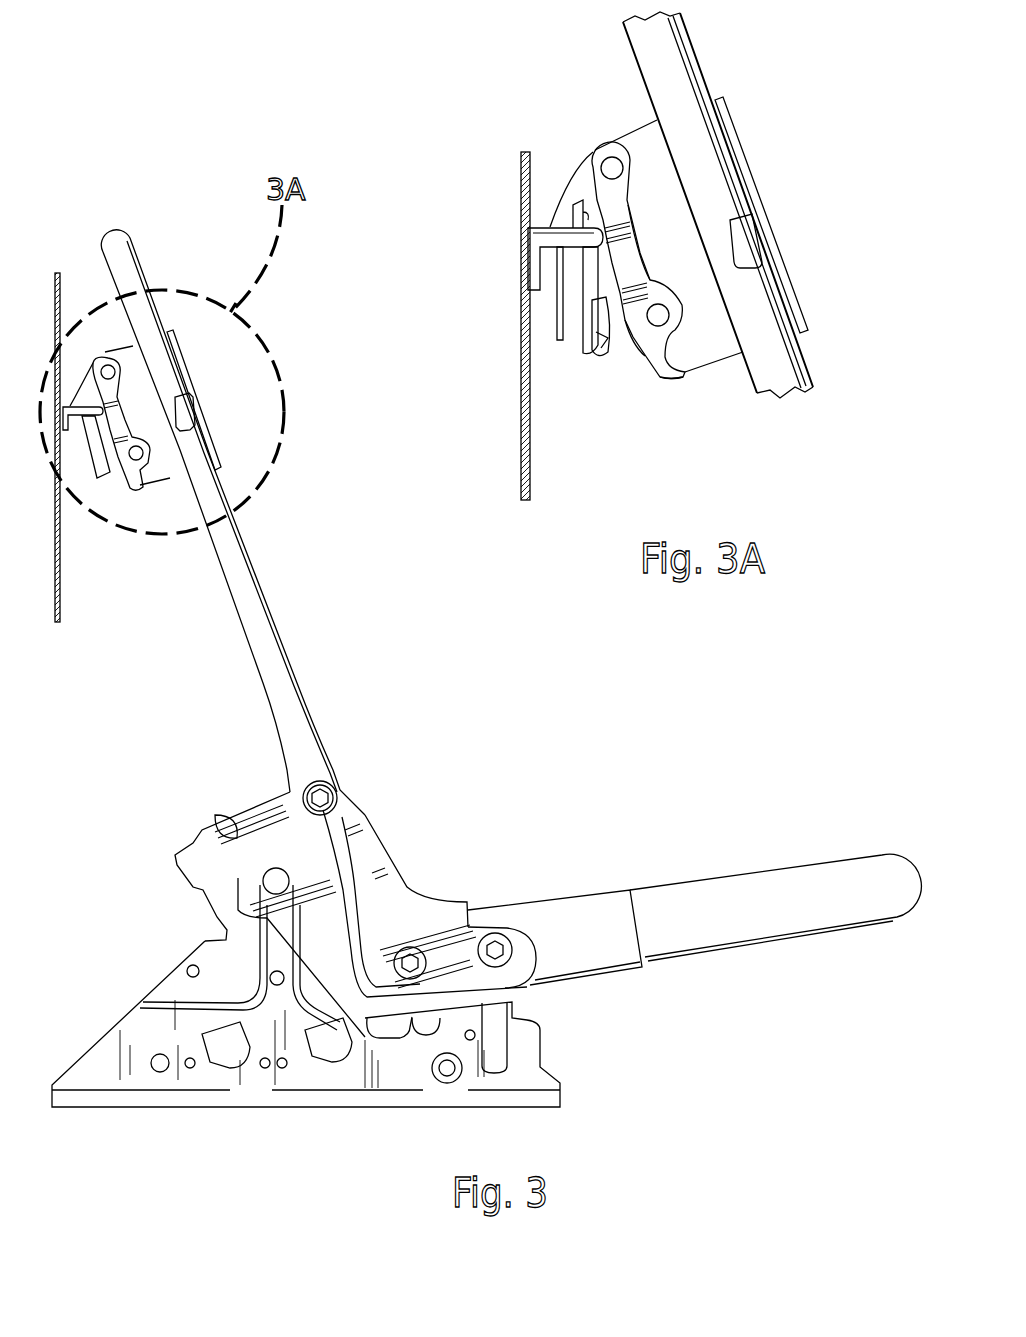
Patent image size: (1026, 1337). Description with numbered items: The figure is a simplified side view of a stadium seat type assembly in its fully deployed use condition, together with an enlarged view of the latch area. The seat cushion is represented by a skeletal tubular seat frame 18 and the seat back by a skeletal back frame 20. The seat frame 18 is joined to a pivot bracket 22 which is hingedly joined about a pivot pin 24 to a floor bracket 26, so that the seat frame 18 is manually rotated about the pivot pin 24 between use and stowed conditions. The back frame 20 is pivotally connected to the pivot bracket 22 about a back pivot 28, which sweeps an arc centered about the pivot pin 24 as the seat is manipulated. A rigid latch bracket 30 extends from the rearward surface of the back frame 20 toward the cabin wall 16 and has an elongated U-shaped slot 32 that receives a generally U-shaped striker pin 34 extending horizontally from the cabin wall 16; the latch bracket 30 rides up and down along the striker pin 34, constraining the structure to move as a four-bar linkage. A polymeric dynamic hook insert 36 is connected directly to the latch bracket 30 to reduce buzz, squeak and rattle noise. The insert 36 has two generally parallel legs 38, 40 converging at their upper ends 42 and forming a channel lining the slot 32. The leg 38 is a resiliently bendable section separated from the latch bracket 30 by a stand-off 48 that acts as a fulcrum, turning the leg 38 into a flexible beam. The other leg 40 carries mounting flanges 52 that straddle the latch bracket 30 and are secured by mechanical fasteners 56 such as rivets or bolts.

In FIG. 3, the cabin wall 16 is at (62, 587).
In FIG. 3A, the cabin wall 16 is at (530, 435).
In FIG. 3, the seat frame 18 is at (713, 953).
In FIG. 3, the back frame 20 is at (268, 607).
In FIG. 3A, the back frame 20 is at (807, 373).
In FIG. 3, the pivot bracket 22 is at (236, 808).
In FIG. 3, the pivot pin 24 is at (277, 877).
In FIG. 3, the floor bracket 26 is at (125, 1013).
In FIG. 3, the back pivot 28 is at (323, 795).
In FIG. 3, the latch bracket 30 is at (167, 480).
In FIG. 3A, the latch bracket 30 is at (707, 363).
In FIG. 3A, the slot 32 is at (607, 302).
In FIG. 3, the striker pin 34 is at (83, 410).
In FIG. 3A, the striker pin 34 is at (562, 238).
In FIG. 3A, the dynamic hook insert 36 is at (661, 378).
In FIG. 3A, the leg 38 is at (604, 306).
In FIG. 3A, the leg 40 is at (630, 343).
In FIG. 3A, the upper ends 42 is at (597, 218).
In FIG. 3A, the stand-off 48 is at (600, 338).
In FIG. 3A, the mounting flange 52 is at (640, 262).
In FIG. 3A, the fastener 56 is at (612, 163).